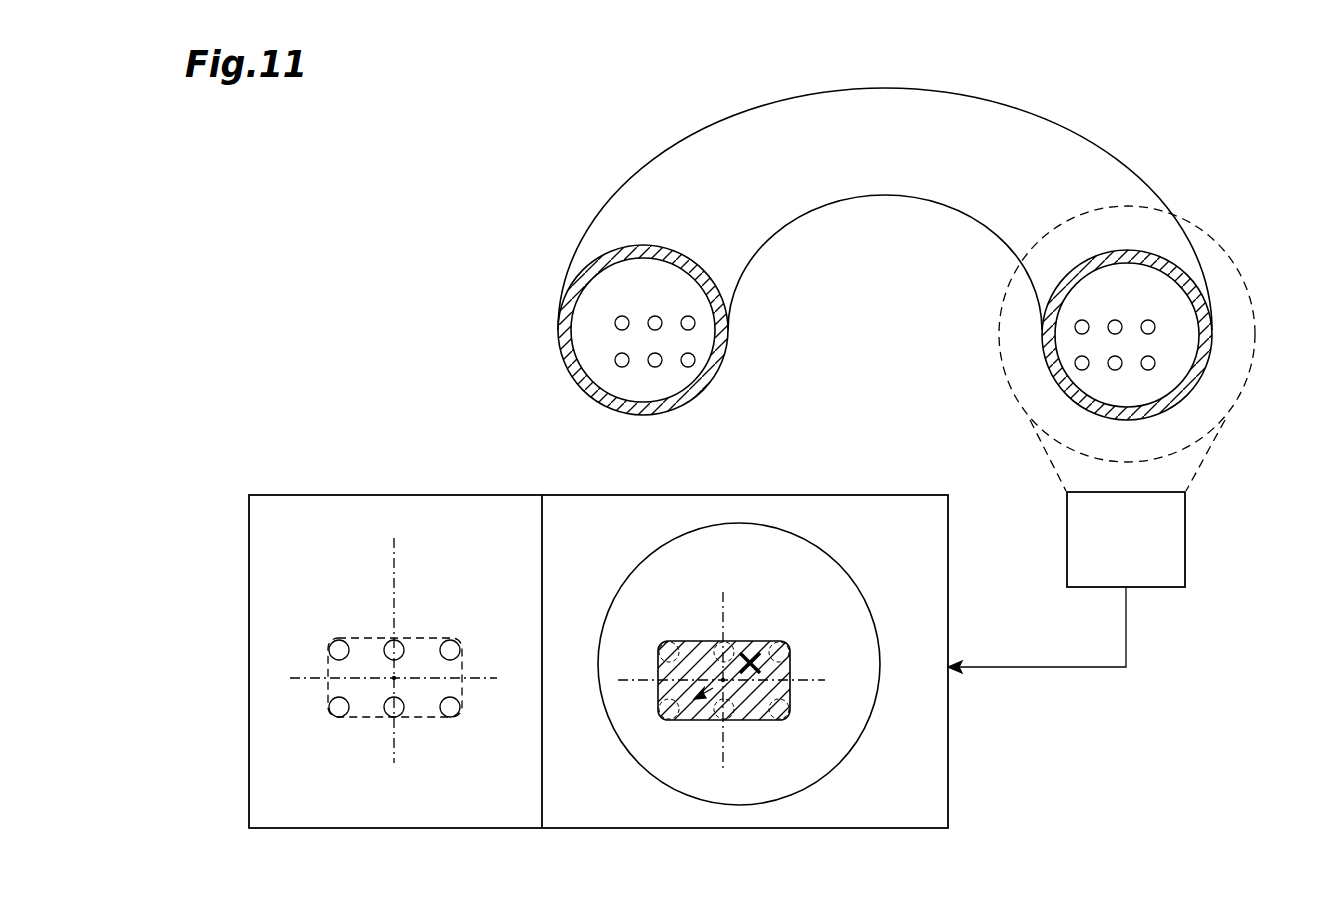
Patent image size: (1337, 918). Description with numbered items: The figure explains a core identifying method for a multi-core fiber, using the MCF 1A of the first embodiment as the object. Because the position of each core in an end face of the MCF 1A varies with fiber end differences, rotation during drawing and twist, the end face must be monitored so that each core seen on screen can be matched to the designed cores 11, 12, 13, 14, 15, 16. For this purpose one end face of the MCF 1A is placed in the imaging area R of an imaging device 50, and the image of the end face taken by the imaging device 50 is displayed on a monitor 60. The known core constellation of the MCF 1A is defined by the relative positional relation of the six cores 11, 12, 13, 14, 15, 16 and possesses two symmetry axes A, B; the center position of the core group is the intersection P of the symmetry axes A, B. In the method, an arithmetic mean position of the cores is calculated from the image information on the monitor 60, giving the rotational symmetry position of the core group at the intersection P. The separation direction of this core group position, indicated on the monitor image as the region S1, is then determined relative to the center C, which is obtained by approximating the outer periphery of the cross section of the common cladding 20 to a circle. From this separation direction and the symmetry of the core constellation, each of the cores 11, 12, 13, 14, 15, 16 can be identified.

The MCF 1A is at (1069, 162).
The imaging area R is at (1230, 310).
The imaging device 50 is at (1185, 518).
The monitor 60 is at (298, 495).
The common cladding 20 is at (846, 714).
The core 11 is at (330, 640).
The core 12 is at (386, 642).
The core 13 is at (448, 640).
The core 14 is at (338, 718).
The core 15 is at (402, 715).
The core 16 is at (455, 718).
The intersection P is at (390, 682).
The symmetry axis A is at (397, 547).
The symmetry axis B is at (484, 678).
The center C is at (752, 650).
The fiber end face region S1 is at (708, 712).